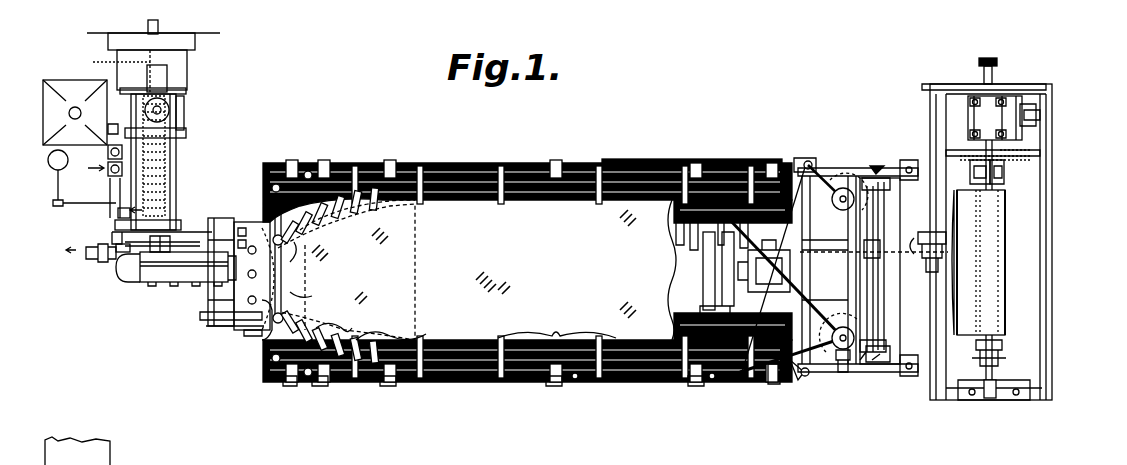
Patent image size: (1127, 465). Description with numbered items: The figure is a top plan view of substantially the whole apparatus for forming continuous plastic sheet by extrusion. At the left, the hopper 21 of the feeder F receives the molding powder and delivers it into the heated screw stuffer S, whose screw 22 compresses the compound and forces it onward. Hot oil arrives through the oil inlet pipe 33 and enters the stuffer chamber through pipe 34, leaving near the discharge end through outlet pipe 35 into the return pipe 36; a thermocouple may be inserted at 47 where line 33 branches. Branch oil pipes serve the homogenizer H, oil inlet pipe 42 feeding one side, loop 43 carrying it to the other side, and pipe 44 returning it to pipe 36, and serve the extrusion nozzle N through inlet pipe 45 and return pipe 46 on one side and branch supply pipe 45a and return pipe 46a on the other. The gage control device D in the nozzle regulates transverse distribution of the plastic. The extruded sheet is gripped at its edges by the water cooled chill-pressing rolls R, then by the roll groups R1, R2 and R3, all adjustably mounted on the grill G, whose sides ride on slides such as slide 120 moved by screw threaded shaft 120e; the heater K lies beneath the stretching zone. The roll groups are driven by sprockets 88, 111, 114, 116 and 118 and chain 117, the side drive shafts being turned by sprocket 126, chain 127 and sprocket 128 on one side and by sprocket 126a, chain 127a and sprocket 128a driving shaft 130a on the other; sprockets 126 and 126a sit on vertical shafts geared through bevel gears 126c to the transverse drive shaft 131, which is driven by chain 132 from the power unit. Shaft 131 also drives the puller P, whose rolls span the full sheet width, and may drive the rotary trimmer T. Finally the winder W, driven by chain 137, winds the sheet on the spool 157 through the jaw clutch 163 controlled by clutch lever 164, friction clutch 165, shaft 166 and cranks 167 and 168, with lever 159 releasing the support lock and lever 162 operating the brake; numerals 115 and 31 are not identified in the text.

The hopper 21 is at (72, 86).
The pipe 34 is at (110, 128).
The oil inlet pipe 33 is at (94, 164).
The feeder F is at (170, 108).
The screw stuffer S is at (182, 118).
The screw 22 is at (158, 160).
The return pipe 46 is at (250, 218).
The oil inlet pipe 45 is at (236, 194).
The thermocouple insertion point 47 is at (110, 176).
The outlet pipe 35 is at (118, 212).
The return pipe 36 is at (114, 240).
The pipe 44 is at (114, 254).
The oil inlet pipe 42 is at (118, 284).
The loop 43 is at (128, 286).
The return pipe 46a is at (226, 288).
The homogenizer H is at (164, 288).
The branch supply pipe 45a is at (205, 314).
The gage control device D is at (250, 334).
The extrusion nozzle N is at (264, 326).
The sprocket 88 is at (290, 382).
The sprocket 111 is at (320, 384).
The driving sprocket 114 is at (388, 384).
The grill G is at (478, 382).
The sprocket 116 is at (558, 384).
The pin 115 is at (574, 382).
The sprocket 118 is at (724, 384).
The chain 117 is at (744, 384).
The chain 132 is at (778, 384).
The sprocket 128 is at (804, 374).
The chain 127 is at (816, 376).
The bevel gear 126c is at (838, 356).
The sprocket 126 is at (852, 362).
The shaft 130a is at (646, 163).
The sprocket 128a is at (806, 158).
The chain 127a is at (808, 162).
The sprocket 126a is at (844, 188).
The puller P is at (882, 216).
The transverse drive shaft 131 is at (850, 284).
The screw threaded shaft 120e is at (705, 260).
The slide 120 is at (718, 314).
The heater K is at (418, 266).
The chill-pressing rolls R is at (300, 275).
The roll group R1 is at (335, 317).
The roll group R2 is at (391, 324).
The roll group R3 is at (557, 323).
The rotary trimmer T is at (878, 346).
The friction clutch 165 is at (998, 82).
The shaft 166 is at (988, 120).
The clutch lever 164 is at (1030, 130).
The lever 159 is at (1000, 142).
The lever 162 is at (1006, 154).
The crank 167 is at (972, 164).
The crank 168 is at (1000, 162).
The jaw clutch 163 is at (946, 226).
The winder W is at (1010, 263).
The chain 137 is at (940, 280).
The spool 157 is at (1008, 348).
The pipe 31 is at (132, 464).